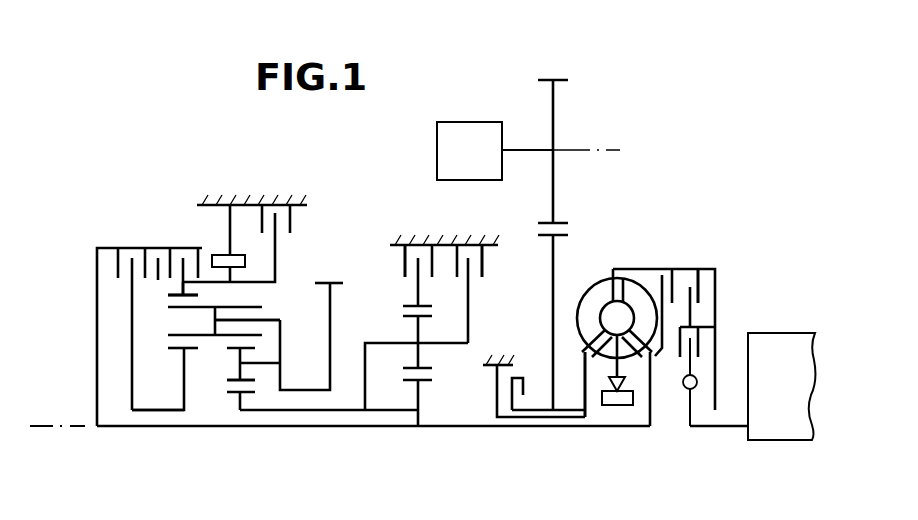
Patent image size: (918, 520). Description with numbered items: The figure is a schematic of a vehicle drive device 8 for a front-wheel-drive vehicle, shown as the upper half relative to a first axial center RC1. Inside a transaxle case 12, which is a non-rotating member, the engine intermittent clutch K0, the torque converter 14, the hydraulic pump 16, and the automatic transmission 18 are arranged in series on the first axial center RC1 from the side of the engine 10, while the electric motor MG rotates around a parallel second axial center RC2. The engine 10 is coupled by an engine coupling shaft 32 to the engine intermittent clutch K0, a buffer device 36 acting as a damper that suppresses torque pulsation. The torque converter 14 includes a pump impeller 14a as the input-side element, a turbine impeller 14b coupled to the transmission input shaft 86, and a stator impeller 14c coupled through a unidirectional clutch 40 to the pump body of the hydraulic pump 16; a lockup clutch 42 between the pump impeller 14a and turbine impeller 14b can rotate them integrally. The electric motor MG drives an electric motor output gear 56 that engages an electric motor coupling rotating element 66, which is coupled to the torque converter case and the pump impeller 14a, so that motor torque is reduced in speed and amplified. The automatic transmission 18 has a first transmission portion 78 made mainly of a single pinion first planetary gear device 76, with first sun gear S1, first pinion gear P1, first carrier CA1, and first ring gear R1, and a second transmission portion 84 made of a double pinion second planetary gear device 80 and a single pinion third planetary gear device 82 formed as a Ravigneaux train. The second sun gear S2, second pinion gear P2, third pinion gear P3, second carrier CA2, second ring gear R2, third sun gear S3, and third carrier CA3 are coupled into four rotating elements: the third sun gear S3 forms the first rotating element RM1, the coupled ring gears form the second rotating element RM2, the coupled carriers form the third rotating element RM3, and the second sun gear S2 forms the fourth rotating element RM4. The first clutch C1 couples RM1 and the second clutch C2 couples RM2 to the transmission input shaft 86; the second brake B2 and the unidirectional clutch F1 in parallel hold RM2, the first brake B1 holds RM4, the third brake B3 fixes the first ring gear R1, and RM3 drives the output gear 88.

The vehicle drive device 8 is at (786, 40).
The engine 10 is at (768, 338).
The transaxle case 12 is at (250, 200).
The torque converter 14 is at (634, 226).
The pump impeller 14a is at (603, 290).
The turbine impeller 14b is at (628, 288).
The stator impeller 14c is at (593, 360).
The hydraulic pump 16 is at (522, 382).
The automatic transmission 18 is at (126, 88).
The engine coupling shaft 32 is at (697, 430).
The buffer device 36 is at (686, 389).
The unidirectional clutch 40 is at (622, 407).
The lockup clutch 42 is at (706, 291).
The electric motor output gear 56 is at (556, 206).
The electric motor coupling rotating element 66 is at (550, 322).
The first planetary gear device 76 is at (416, 450).
The first transmission portion 78 is at (404, 202).
The second planetary gear device 80 is at (244, 448).
The third planetary gear device 82 is at (185, 440).
The second transmission portion 84 is at (196, 156).
The transmission input shaft 86 is at (477, 430).
The output gear 88 is at (340, 282).
The first brake B1 is at (484, 268).
The second brake B2 is at (300, 222).
The third brake B3 is at (404, 268).
The first clutch C1 is at (118, 272).
The second clutch C2 is at (206, 258).
The first carrier CA1 is at (448, 345).
The second carrier CA2 is at (279, 318).
The third carrier CA3 is at (271, 286).
The unidirectional clutch F1 is at (222, 246).
The engine intermittent clutch K0 is at (702, 346).
The electric motor MG is at (495, 151).
The first pinion gear P1 is at (406, 318).
The second pinion gear P2 is at (230, 350).
The third pinion gear P3 is at (180, 310).
The first ring gear R1 is at (428, 294).
The second ring gear R2 is at (170, 290).
The first axial center RC1 is at (54, 430).
The second axial center RC2 is at (612, 149).
The first rotating element RM1 is at (143, 412).
The second rotating element RM2 is at (226, 284).
The third rotating element RM3 is at (284, 336).
The fourth rotating element RM4 is at (310, 412).
The first sun gear S1 is at (406, 382).
The second sun gear S2 is at (230, 394).
The third sun gear S3 is at (174, 350).